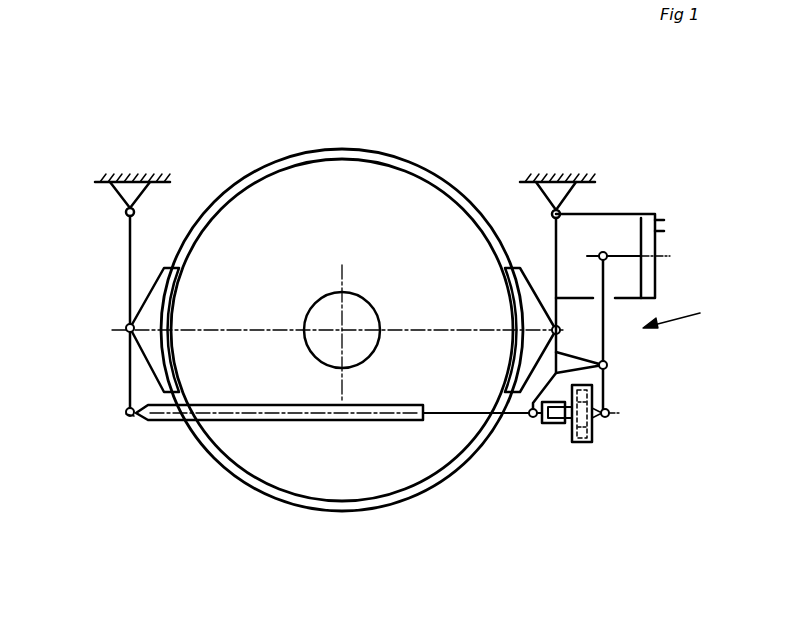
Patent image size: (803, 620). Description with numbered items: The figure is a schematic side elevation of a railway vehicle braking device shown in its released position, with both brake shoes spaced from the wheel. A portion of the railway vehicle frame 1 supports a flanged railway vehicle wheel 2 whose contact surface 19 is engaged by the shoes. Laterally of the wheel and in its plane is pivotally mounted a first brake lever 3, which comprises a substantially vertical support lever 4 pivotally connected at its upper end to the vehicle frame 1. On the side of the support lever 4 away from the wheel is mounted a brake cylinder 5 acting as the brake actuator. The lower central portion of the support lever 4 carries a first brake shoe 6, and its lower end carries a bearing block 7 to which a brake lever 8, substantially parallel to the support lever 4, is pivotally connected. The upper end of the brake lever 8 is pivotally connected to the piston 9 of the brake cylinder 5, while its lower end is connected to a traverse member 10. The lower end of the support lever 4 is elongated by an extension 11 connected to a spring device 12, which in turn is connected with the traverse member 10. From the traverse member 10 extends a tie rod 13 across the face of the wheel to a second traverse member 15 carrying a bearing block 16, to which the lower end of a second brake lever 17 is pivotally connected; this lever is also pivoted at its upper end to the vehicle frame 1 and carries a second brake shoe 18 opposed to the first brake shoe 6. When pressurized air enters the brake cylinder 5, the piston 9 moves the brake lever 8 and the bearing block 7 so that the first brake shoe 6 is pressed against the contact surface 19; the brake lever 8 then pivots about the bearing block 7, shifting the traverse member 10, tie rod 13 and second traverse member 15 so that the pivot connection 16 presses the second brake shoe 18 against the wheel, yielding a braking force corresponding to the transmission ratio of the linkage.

The railway vehicle frame 1 is at (121, 180).
The flanged railway vehicle wheel 2 is at (295, 190).
The contact surface 19 is at (391, 160).
The first brake lever 3 is at (707, 307).
The support lever 4 is at (553, 240).
The brake cylinder 5 is at (623, 214).
The first brake shoe 6 is at (530, 313).
The bearing block 7 is at (580, 363).
The brake lever 8 is at (607, 347).
The piston 9 is at (657, 248).
The traverse member 10 is at (583, 443).
The extension 11 is at (528, 408).
The spring device 12 is at (545, 425).
The tie rod 13 is at (240, 421).
The second traverse member 15 is at (130, 418).
The bearing block 16 is at (124, 412).
The second brake lever 17 is at (127, 272).
The second brake shoe 18 is at (158, 310).